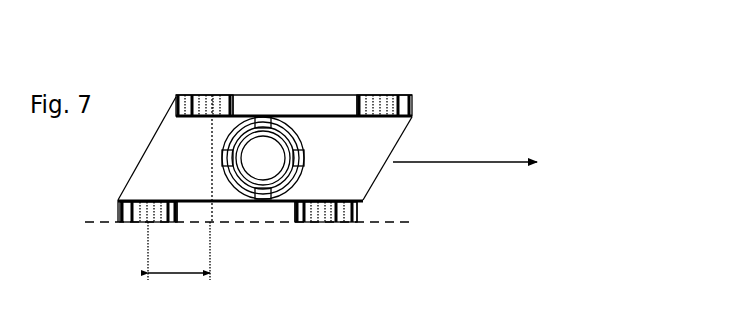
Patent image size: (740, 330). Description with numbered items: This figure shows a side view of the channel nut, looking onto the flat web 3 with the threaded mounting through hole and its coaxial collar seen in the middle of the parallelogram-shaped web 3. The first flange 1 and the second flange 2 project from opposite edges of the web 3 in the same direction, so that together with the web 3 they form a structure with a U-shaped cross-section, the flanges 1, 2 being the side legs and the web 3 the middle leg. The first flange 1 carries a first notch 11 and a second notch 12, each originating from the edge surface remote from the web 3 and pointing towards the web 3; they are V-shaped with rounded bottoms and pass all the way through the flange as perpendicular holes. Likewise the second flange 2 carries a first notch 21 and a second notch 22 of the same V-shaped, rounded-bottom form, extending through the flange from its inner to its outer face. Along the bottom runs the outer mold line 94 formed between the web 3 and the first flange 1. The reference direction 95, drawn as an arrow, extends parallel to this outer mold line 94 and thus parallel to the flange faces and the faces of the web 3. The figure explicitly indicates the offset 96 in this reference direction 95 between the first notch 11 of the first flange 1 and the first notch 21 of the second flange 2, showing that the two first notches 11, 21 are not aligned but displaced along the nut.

The first flange 1 is at (255, 212).
The second flange 2 is at (302, 100).
The web 3 is at (363, 150).
The first notch 11 is at (133, 238).
The second notch 12 is at (328, 232).
The first notch 21 is at (205, 92).
The second notch 22 is at (392, 87).
The outer mold line 94 is at (390, 226).
The reference direction 95 is at (465, 177).
The offset 96 is at (179, 251).